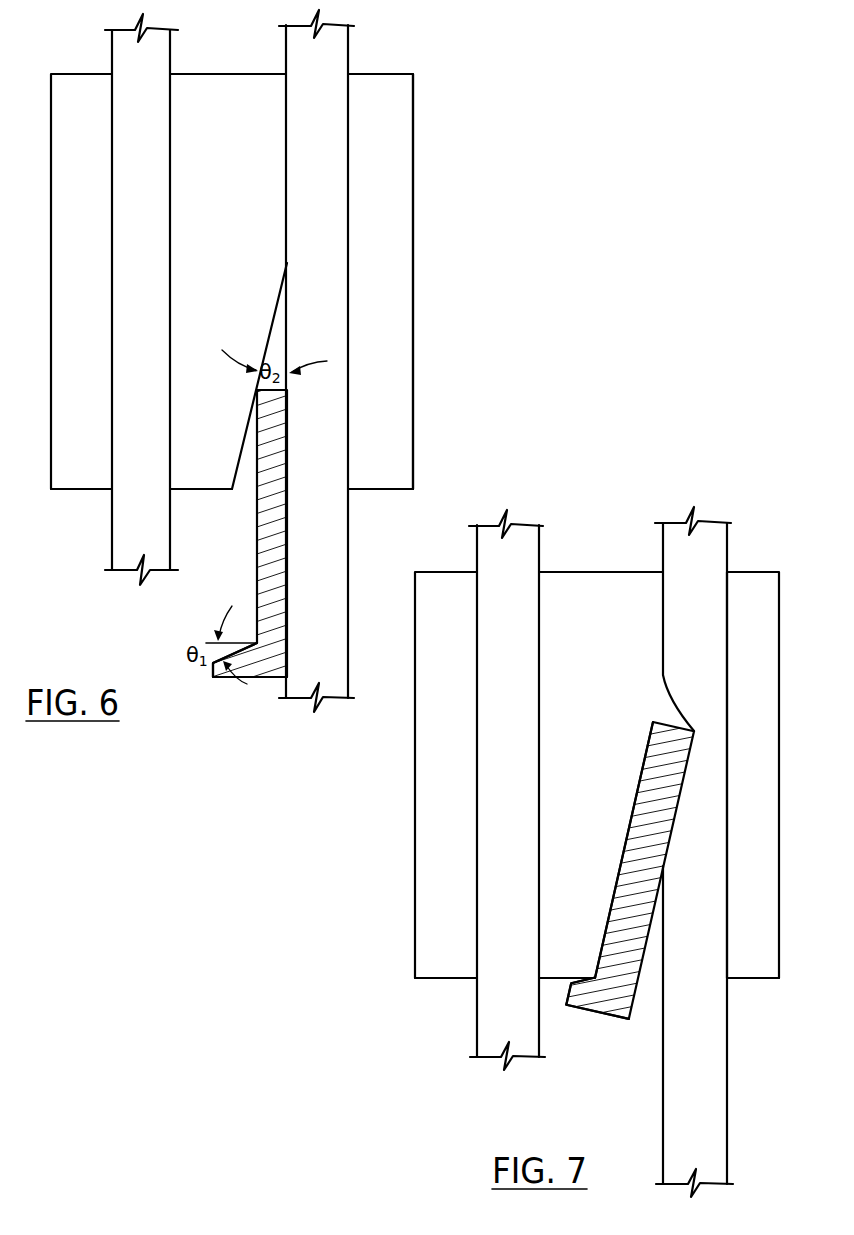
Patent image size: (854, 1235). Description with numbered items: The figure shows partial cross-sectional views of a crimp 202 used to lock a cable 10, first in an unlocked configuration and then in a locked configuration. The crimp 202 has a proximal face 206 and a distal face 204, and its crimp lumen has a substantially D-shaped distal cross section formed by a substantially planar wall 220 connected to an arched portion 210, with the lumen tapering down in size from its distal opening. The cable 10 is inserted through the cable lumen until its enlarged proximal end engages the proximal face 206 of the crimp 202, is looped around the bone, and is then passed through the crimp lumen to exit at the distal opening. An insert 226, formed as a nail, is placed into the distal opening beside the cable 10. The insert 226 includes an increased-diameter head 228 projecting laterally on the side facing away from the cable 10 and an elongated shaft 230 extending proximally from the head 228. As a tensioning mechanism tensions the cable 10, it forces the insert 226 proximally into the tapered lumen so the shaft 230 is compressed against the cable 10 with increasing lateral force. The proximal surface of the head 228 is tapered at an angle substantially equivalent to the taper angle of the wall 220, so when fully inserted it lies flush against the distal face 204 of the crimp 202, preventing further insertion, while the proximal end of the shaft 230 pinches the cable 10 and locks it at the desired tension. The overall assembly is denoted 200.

In FIG. 6, the cable 10 is at (137, 135).
In FIG. 7, the cable 10 is at (502, 630).
In FIG. 6, the centralizer assembly 200 is at (434, 313).
In FIG. 7, the centralizer assembly 200 is at (382, 810).
In FIG. 6, the crimp 202 is at (84, 490).
In FIG. 7, the crimp 202 is at (753, 982).
In FIG. 6, the distal face 204 is at (383, 491).
In FIG. 7, the distal face 204 is at (450, 982).
In FIG. 6, the proximal face 206 is at (378, 70).
In FIG. 7, the proximal face 206 is at (745, 563).
In FIG. 6, the arched portion 210 is at (350, 392).
In FIG. 7, the arched portion 210 is at (725, 895).
In FIG. 6, the substantially planar wall 220 is at (265, 330).
In FIG. 7, the substantially planar wall 220 is at (625, 843).
In FIG. 6, the insert 226 is at (258, 664).
In FIG. 7, the insert 226 is at (620, 1003).
In FIG. 6, the head 228 is at (213, 676).
In FIG. 7, the head 228 is at (591, 1003).
In FIG. 6, the shaft 230 is at (266, 562).
In FIG. 7, the shaft 230 is at (657, 837).